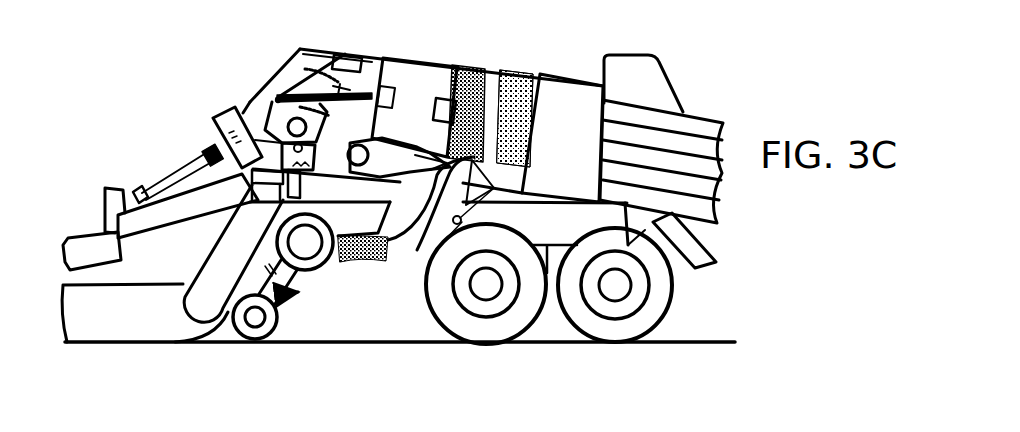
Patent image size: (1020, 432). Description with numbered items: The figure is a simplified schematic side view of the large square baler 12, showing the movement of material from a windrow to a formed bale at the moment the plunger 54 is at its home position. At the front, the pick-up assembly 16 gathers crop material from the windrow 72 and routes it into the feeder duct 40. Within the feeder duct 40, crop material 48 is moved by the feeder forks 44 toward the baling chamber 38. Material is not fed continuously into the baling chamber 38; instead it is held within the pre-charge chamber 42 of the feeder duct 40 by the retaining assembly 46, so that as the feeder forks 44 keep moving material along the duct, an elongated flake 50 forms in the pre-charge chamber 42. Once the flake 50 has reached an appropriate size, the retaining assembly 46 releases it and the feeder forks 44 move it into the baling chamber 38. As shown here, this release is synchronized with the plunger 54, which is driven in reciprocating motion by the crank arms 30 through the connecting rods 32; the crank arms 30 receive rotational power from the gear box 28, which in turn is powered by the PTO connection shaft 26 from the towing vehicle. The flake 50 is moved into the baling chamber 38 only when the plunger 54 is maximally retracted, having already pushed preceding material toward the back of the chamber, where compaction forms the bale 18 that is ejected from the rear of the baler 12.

The large square baler 12 is at (697, 93).
The pick-up assembly 16 is at (223, 324).
The bale 18 is at (523, 147).
The PTO connection shaft 26 is at (203, 153).
The gear box 28 is at (248, 132).
The crank arms 30 is at (278, 123).
The connecting rods 32 is at (350, 92).
The baling chamber 38 is at (570, 63).
The feeder duct 40 is at (358, 278).
The pre-charge chamber 42 is at (443, 190).
The feeder forks 44 is at (392, 140).
The retaining assembly 46 is at (466, 205).
The crop material 48 is at (388, 262).
The flake 50 is at (475, 65).
The plunger 54 is at (412, 82).
The windrow 72 is at (145, 308).